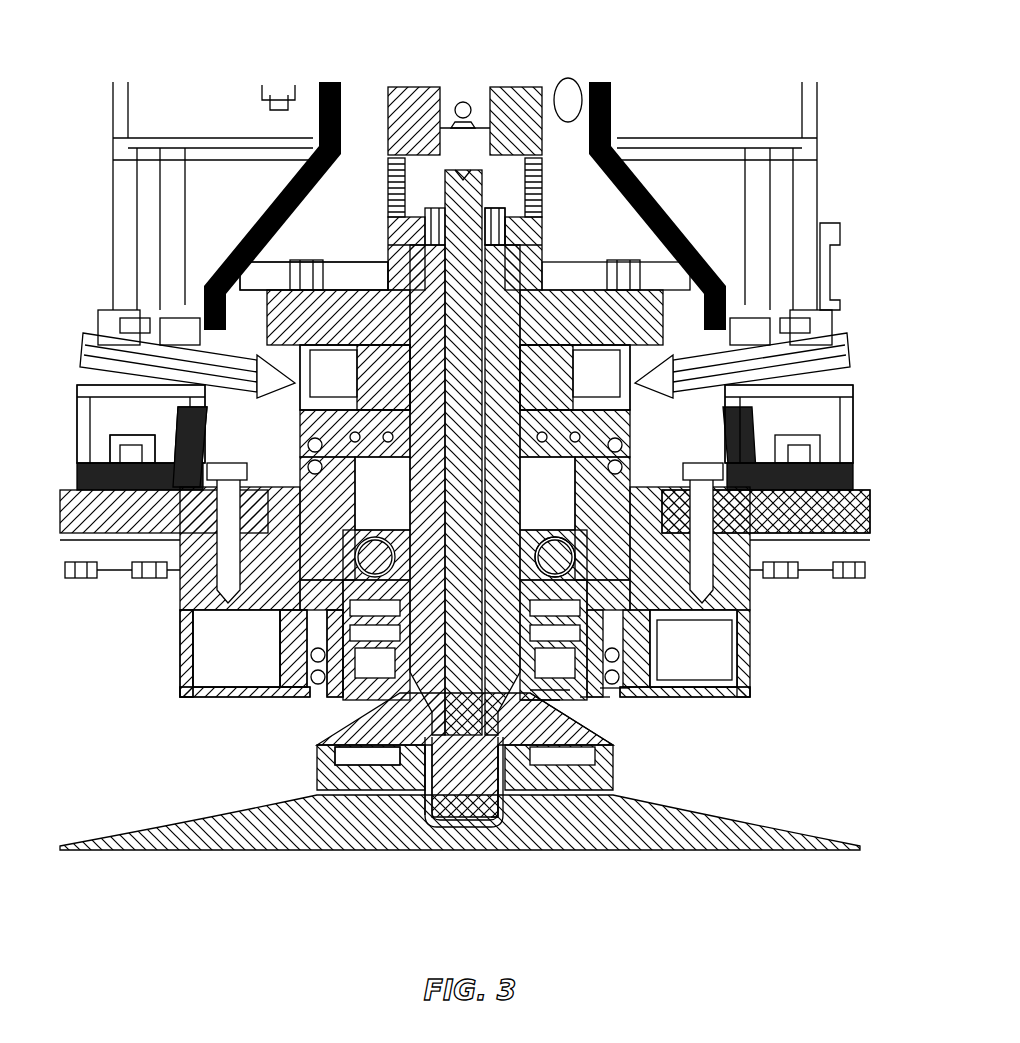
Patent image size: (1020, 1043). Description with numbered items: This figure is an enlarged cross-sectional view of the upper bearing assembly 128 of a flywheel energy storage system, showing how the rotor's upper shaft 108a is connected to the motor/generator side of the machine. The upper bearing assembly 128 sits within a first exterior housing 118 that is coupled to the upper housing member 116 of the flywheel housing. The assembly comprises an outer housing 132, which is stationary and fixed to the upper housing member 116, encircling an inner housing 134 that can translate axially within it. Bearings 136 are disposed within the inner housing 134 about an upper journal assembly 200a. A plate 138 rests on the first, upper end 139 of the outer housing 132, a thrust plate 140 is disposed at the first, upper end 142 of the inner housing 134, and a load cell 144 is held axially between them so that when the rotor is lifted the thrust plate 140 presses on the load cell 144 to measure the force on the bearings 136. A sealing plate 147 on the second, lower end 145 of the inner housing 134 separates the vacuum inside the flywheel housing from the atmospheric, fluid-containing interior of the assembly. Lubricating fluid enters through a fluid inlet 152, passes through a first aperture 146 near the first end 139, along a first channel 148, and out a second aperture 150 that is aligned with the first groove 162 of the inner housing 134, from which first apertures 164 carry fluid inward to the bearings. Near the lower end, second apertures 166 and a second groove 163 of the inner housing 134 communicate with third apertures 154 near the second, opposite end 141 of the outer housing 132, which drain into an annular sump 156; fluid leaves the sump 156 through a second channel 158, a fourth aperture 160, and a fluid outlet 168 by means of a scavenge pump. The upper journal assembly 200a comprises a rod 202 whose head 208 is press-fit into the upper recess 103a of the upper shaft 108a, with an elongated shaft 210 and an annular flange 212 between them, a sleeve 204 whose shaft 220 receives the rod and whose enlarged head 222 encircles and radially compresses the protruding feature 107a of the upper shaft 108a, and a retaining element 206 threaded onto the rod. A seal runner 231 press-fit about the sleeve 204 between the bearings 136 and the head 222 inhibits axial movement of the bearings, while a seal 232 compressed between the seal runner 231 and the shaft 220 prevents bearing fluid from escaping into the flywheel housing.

The upper bearing assembly 128 is at (86, 121).
The first exterior housing 118 is at (253, 217).
The retaining element 206 is at (437, 207).
The elongated shaft 210 is at (473, 180).
The shaft 220 is at (550, 260).
The thrust plate 140 is at (585, 340).
The first, upper end 142 is at (605, 370).
The load cell 144 is at (345, 340).
The plate 138 is at (283, 305).
The first, upper end 139 is at (270, 340).
The fluid inlet 152 is at (97, 372).
The first aperture 146 is at (270, 404).
The first channel 148 is at (270, 432).
The second aperture 150 is at (290, 500).
The upper housing member 116 is at (80, 513).
The fourth aperture 160 is at (640, 378).
The fluid outlet 168 is at (843, 372).
The first apertures 164 is at (600, 503).
The first groove 162 is at (245, 562).
The second apertures 166 is at (290, 645).
The second groove 163 is at (290, 623).
The third apertures 154 is at (295, 655).
The second, opposite end 141 is at (187, 700).
The sealing plate 147 is at (337, 703).
The outer housing 132 is at (743, 588).
The bearings 136 is at (590, 580).
The inner housing 134 is at (640, 657).
The second channel 158 is at (716, 678).
The sump 156 is at (615, 675).
The sleeve 204 is at (320, 772).
The annular flange 212 is at (318, 750).
The upper recess 103a is at (477, 810).
The rod 202 is at (508, 818).
The head 208 is at (430, 806).
The upper shaft 108a is at (577, 800).
The upper journal assembly 200a is at (666, 772).
The protruding feature 107a is at (560, 738).
The enlarged head 222 is at (560, 703).
The seal 232 is at (565, 690).
The second, lower end 145 is at (600, 700).
The seal runner 231 is at (615, 690).